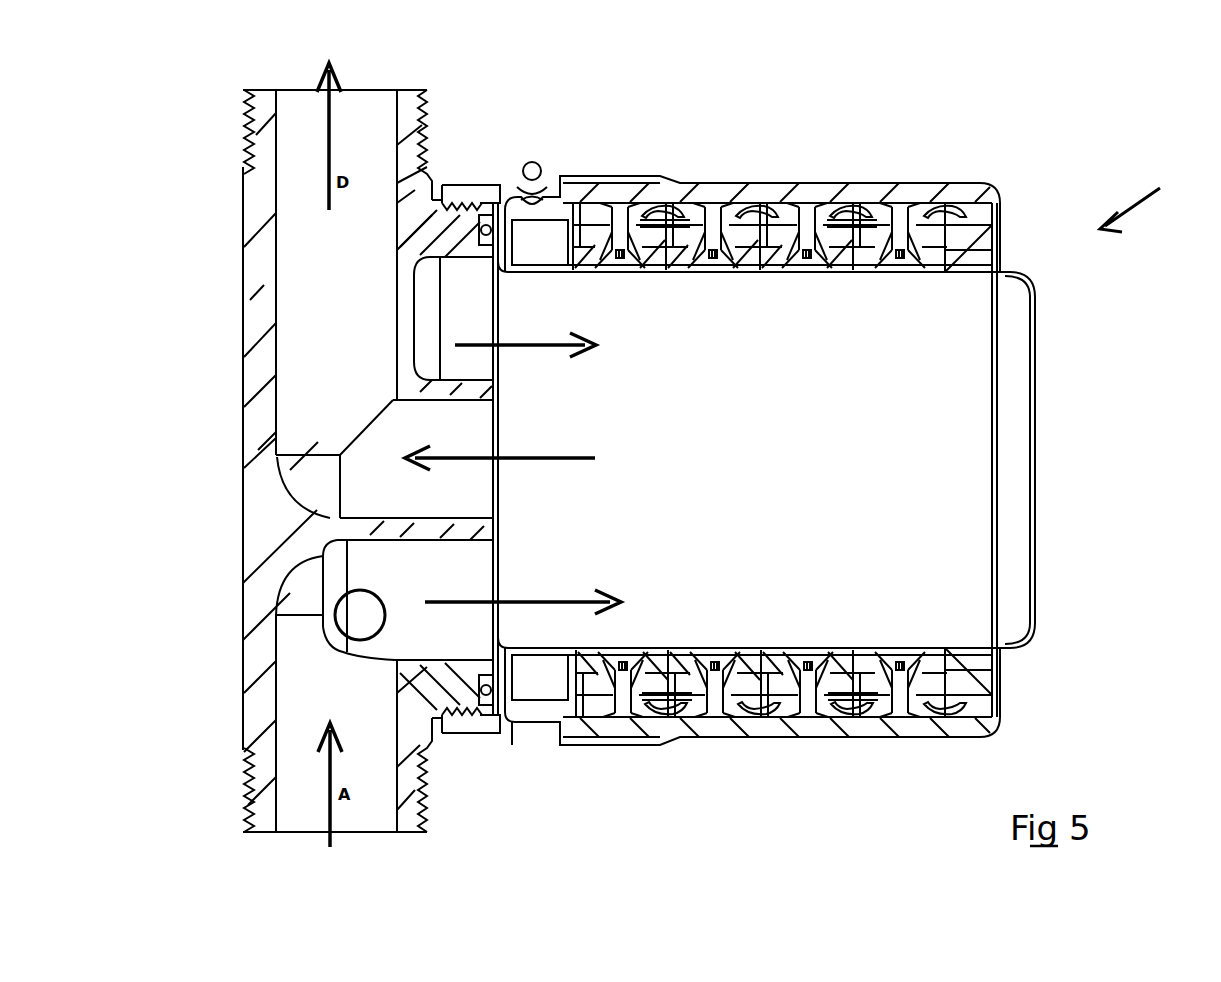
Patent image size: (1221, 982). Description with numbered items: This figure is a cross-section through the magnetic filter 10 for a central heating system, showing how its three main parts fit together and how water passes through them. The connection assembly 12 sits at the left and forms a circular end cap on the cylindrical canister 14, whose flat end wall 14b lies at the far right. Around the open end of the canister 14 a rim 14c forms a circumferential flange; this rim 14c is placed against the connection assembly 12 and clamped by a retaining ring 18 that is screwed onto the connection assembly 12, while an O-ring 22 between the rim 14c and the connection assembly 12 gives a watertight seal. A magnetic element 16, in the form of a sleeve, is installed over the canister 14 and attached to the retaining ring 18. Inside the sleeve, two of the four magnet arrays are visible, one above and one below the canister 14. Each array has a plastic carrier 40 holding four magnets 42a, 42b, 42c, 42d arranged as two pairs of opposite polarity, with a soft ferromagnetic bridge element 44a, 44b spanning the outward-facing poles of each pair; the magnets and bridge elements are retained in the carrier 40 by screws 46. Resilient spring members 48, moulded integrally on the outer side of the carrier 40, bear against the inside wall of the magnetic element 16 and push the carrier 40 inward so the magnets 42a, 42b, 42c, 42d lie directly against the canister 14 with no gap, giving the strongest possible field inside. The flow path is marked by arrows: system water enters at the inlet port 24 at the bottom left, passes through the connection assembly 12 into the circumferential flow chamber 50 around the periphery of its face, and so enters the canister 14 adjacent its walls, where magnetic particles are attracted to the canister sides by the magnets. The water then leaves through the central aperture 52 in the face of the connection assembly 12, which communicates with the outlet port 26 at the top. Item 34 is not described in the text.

The magnetic filter 10 is at (1148, 198).
The connection assembly 12 is at (257, 515).
The canister 14 is at (1040, 398).
The flat end wall 14b is at (1040, 500).
The rim 14c is at (500, 673).
The magnetic element 16 is at (875, 180).
The retaining ring 18 is at (460, 190).
The O-ring 22 is at (500, 672).
The inlet port 24 is at (303, 808).
The outlet port 26 is at (378, 115).
The ball 34 is at (534, 162).
The carrier 40 is at (935, 215).
The magnet 42a is at (625, 237).
The magnet 42b is at (700, 240).
The magnet 42c is at (790, 240).
The magnet 42d is at (880, 240).
The soft ferromagnetic bridge element 44a is at (660, 232).
The soft ferromagnetic bridge element 44b is at (858, 232).
The screws 46 is at (598, 252).
The resilient spring members 48 is at (688, 205).
The circumferential flow chamber 50 is at (478, 327).
The central aperture 52 is at (478, 440).